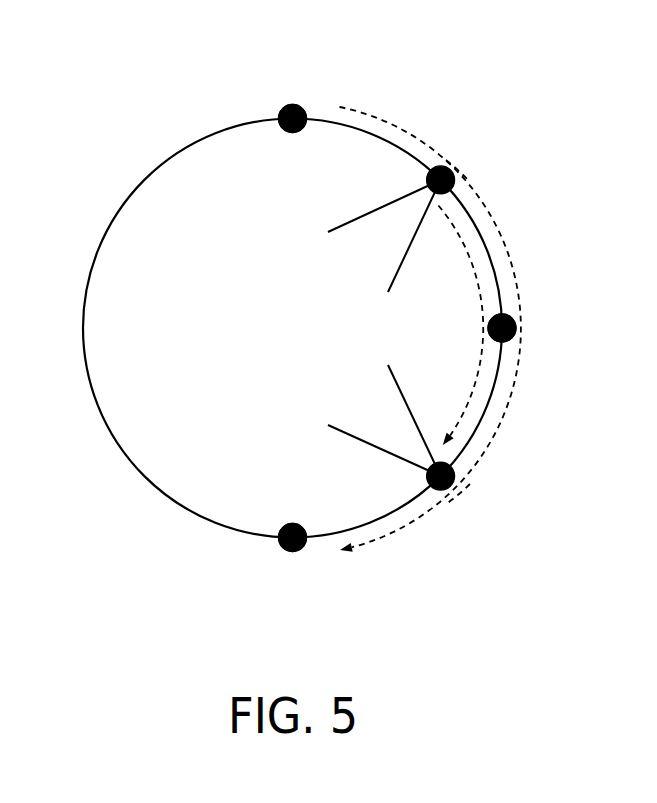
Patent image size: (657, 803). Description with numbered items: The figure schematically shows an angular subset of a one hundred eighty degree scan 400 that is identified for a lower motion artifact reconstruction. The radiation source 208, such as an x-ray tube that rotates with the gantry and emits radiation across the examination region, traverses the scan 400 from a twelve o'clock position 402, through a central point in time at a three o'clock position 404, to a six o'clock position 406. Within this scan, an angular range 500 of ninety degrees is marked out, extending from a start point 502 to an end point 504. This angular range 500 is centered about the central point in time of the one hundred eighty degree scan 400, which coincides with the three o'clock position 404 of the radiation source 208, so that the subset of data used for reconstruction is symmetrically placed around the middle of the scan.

The radiation source 208 is at (292, 104).
The 180 degree scan 400 is at (495, 224).
The 12 O'clock position 402 is at (319, 92).
The 3 O'clock position 404 is at (541, 307).
The 6 O'clock position 406 is at (267, 566).
The angular range 500 is at (480, 288).
The start of angular range 502 is at (476, 157).
The end of angular range 504 is at (470, 506).